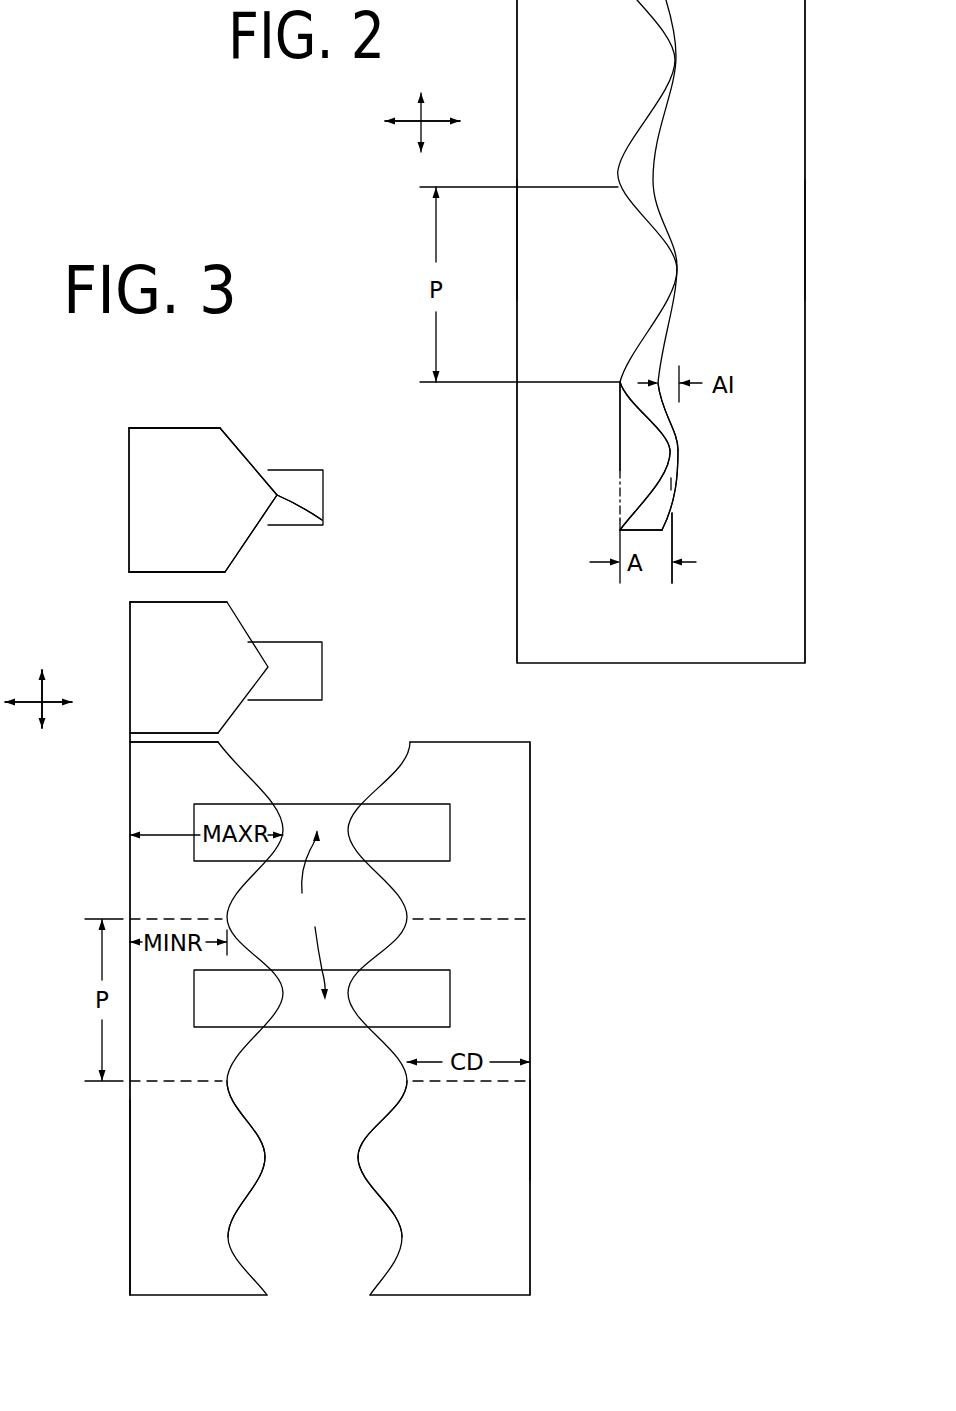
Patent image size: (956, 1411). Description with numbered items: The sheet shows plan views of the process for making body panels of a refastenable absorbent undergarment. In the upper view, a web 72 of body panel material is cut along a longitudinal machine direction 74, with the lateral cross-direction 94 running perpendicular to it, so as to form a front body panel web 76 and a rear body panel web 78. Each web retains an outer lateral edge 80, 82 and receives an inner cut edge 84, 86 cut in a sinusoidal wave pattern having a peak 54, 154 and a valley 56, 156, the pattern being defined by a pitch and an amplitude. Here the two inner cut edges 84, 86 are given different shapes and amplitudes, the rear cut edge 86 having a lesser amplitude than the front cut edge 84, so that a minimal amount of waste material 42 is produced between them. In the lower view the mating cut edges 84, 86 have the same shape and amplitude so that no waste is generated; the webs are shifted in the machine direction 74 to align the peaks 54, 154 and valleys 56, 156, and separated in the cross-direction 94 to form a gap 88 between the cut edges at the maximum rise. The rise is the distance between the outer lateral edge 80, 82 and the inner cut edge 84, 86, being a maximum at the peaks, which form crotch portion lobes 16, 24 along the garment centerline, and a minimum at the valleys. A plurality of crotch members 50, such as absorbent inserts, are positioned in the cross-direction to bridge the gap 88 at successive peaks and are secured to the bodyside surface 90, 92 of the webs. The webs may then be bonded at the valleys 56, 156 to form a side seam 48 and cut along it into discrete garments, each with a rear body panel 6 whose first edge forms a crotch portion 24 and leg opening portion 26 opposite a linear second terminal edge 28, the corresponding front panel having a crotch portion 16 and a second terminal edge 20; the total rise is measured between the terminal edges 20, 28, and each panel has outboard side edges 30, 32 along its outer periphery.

In FIG. 3, the rear body panel 6 is at (180, 521).
In FIG. 3, the crotch portion 16 is at (322, 520).
In FIG. 3, the second terminal edge 20 is at (78, 500).
In FIG. 3, the crotch portion 24 is at (277, 495).
In FIG. 3, the leg opening portion 26 is at (247, 450).
In FIG. 3, the second terminal edge 28 is at (129, 507).
In FIG. 3, the outboard side edge 30 is at (135, 480).
In FIG. 3, the outboard side edge 32 is at (145, 427).
In FIG. 2, the waste material 42 is at (648, 362).
In FIG. 3, the side seam 48 is at (165, 426).
In FIG. 3, the crotch member 50 is at (317, 497).
In FIG. 2, the peak 54 is at (668, 448).
In FIG. 3, the peak 54 is at (265, 1162).
In FIG. 2, the valley 56 is at (620, 384).
In FIG. 3, the valley 56 is at (230, 1235).
In FIG. 2, the web of body panel material 72 is at (694, 593).
In FIG. 2, the longitudinal machine direction 74 is at (420, 133).
In FIG. 3, the longitudinal machine direction 74 is at (42, 712).
In FIG. 2, the front body panel web 76 is at (517, 238).
In FIG. 3, the front body panel web 76 is at (153, 1133).
In FIG. 2, the rear body panel web 78 is at (785, 243).
In FIG. 3, the rear body panel web 78 is at (505, 1112).
In FIG. 2, the outer lateral edge 80 is at (517, 217).
In FIG. 3, the outer lateral edge 80 is at (128, 1110).
In FIG. 2, the outer lateral edge 82 is at (805, 196).
In FIG. 3, the outer lateral edge 82 is at (513, 1205).
In FIG. 2, the inner cut edge 84 is at (650, 230).
In FIG. 3, the inner cut edge 84 is at (250, 1118).
In FIG. 2, the inner cut edge 86 is at (662, 213).
In FIG. 3, the inner cut edge 86 is at (382, 1113).
In FIG. 3, the gap 88 is at (343, 917).
In FIG. 3, the bodyside surface 90 is at (155, 1193).
In FIG. 3, the bodyside surface 92 is at (500, 1142).
In FIG. 2, the lateral cross-direction 94 is at (424, 114).
In FIG. 3, the lateral cross-direction 94 is at (48, 702).
In FIG. 2, the peak 154 is at (658, 365).
In FIG. 3, the peak 154 is at (360, 1165).
In FIG. 2, the valley 156 is at (678, 452).
In FIG. 3, the valley 156 is at (402, 1235).